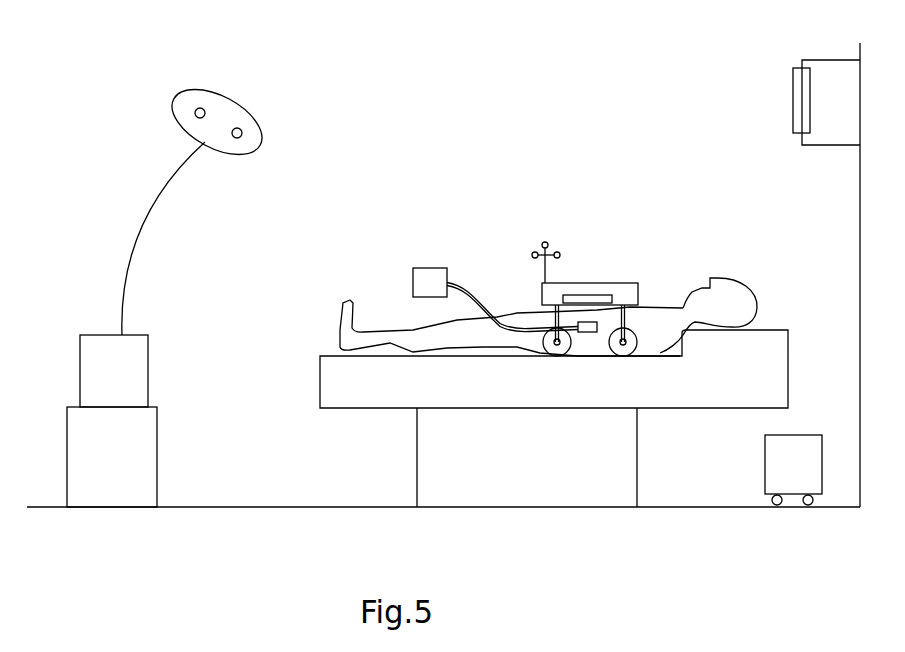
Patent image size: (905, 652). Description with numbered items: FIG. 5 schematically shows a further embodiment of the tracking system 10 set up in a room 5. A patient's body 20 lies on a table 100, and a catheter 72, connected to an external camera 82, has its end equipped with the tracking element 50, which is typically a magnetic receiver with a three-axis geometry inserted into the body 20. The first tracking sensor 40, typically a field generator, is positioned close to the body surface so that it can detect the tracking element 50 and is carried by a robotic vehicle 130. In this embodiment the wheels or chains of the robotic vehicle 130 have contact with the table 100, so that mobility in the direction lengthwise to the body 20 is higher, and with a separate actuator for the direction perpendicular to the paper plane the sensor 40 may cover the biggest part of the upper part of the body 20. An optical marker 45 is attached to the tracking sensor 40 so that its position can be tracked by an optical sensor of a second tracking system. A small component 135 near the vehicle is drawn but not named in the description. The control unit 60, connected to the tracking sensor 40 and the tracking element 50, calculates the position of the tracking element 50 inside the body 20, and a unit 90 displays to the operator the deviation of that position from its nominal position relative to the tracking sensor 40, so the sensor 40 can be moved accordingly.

The tracking system 10 is at (83, 49).
The room 5 is at (250, 512).
The unit 90 is at (800, 97).
The table 100 is at (772, 354).
The body 20 is at (347, 302).
The external camera 82 is at (431, 268).
The catheter 72 is at (468, 290).
The first tracking sensor 40 is at (623, 283).
The robotic vehicle 130 is at (592, 292).
The optical marker 45 is at (545, 238).
The tracking element 50 is at (588, 332).
The connector box 135 is at (632, 355).
The control unit 60 is at (800, 452).